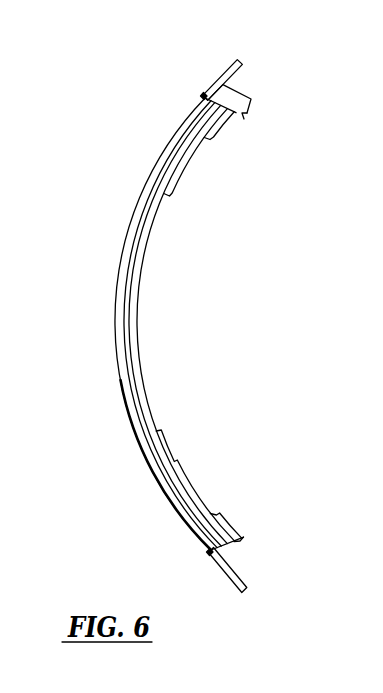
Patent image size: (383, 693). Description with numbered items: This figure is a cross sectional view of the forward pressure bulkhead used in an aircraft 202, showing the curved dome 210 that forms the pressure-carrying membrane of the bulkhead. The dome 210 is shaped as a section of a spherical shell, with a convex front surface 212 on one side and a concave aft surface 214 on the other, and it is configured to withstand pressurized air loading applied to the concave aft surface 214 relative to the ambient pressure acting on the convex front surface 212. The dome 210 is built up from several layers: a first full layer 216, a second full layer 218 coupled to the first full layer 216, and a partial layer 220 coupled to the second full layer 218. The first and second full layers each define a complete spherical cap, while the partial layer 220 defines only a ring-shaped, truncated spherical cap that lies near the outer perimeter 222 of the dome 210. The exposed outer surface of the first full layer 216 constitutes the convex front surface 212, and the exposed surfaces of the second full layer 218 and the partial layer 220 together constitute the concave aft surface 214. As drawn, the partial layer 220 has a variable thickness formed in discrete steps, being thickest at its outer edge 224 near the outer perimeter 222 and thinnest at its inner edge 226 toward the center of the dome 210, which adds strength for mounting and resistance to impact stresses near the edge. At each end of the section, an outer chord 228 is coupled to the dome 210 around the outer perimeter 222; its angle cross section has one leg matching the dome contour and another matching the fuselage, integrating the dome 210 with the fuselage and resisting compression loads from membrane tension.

The aircraft 202 is at (66, 84).
The dome 210 is at (111, 244).
The convex front surface 212 is at (117, 325).
The concave aft surface 214 is at (143, 267).
The first full layer 216 is at (126, 388).
The second full layer 218 is at (132, 345).
The partial layer 220 is at (208, 143).
The outer perimeter 222 is at (244, 108).
The outer edge 224 is at (244, 118).
The inner edge 226 is at (155, 223).
The outer chord 228 is at (204, 95).